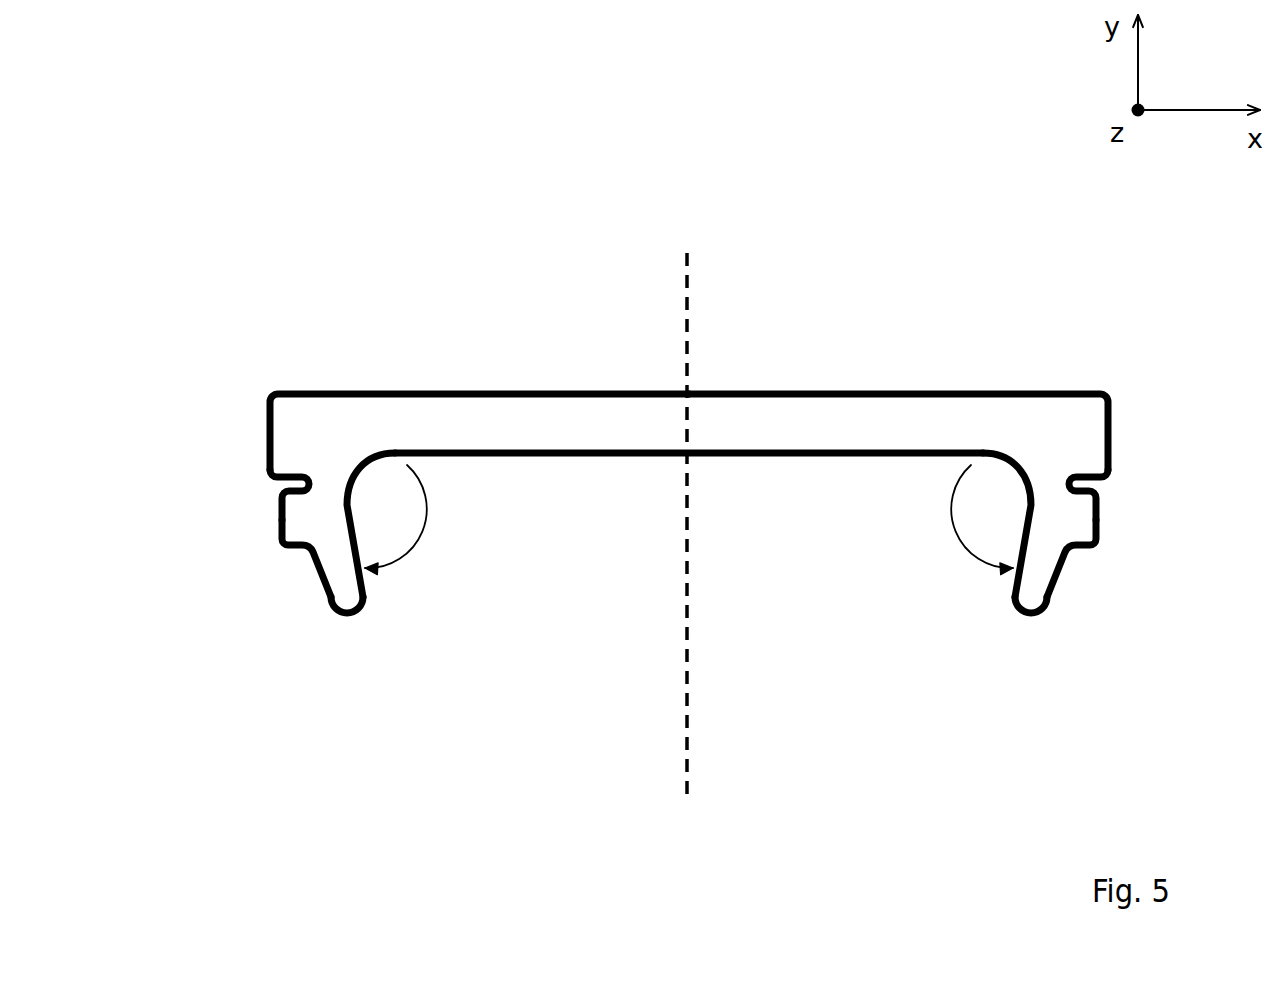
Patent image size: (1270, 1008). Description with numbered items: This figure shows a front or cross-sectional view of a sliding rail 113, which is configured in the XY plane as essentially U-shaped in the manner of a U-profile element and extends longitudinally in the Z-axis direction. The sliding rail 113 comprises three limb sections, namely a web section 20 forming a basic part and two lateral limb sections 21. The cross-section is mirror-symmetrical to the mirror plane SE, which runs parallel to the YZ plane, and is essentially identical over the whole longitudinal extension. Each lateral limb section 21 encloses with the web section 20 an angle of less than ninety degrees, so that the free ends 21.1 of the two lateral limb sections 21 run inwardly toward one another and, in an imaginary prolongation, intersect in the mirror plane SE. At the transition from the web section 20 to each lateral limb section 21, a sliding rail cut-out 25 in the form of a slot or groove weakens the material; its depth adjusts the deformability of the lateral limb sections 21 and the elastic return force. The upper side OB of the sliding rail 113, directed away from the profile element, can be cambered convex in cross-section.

The sliding rail 113 is at (682, 504).
The upper side OB is at (812, 383).
The mirror plane SE is at (686, 508).
The web section 20 is at (593, 462).
The lateral limb section 21 is at (697, 593).
The free end 21.1 is at (352, 622).
The sliding rail cut-out 25 is at (287, 482).